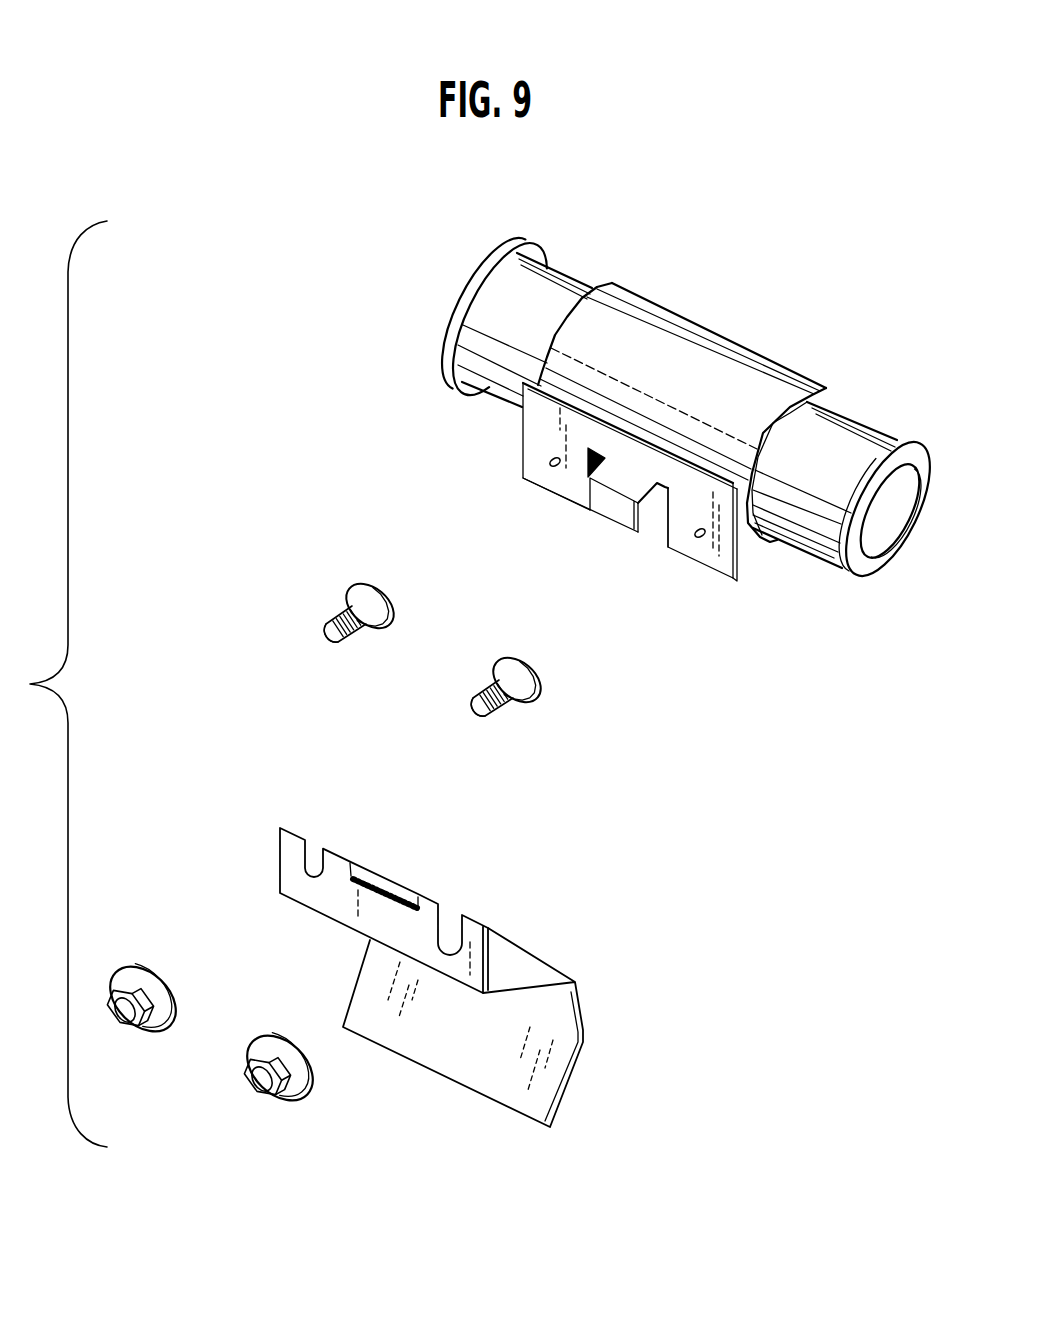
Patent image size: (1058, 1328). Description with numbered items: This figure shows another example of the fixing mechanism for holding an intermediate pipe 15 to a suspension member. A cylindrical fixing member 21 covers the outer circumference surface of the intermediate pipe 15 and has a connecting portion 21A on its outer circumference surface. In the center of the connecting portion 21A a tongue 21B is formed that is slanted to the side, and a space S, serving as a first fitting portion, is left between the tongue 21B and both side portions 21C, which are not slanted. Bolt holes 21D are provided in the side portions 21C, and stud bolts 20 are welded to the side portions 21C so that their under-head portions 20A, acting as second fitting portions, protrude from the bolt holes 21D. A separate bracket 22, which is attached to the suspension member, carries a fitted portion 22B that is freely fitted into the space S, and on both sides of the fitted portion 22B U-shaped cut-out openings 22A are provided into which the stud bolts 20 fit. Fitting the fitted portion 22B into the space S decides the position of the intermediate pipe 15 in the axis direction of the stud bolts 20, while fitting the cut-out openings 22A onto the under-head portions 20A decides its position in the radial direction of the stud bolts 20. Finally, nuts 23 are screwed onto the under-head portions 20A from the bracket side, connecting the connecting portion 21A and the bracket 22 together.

The intermediate pipe 15 is at (552, 288).
The fixing member 21 is at (755, 378).
The space S is at (661, 485).
The connecting portion 21A is at (715, 575).
The tongue 21B is at (610, 509).
The side portions 21C is at (572, 493).
The bolt holes 21D is at (544, 459).
The stud bolts 20 is at (468, 712).
The under-head portions 20A is at (500, 687).
The bracket 22 is at (465, 1067).
The cut-out openings 22A is at (303, 897).
The fitted portion 22B is at (387, 880).
The nuts 23 is at (257, 1090).